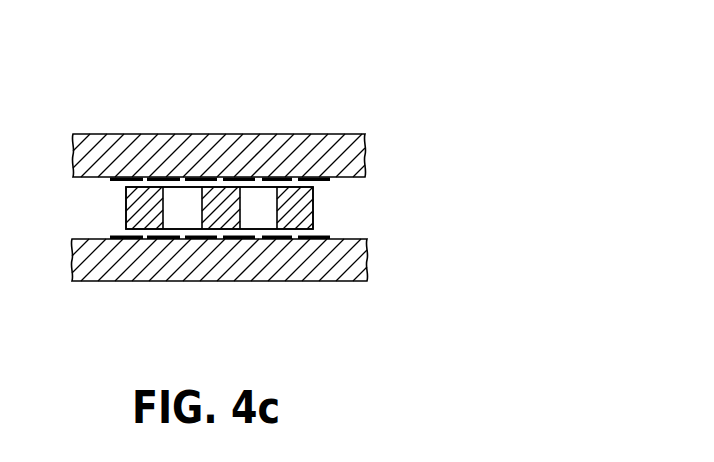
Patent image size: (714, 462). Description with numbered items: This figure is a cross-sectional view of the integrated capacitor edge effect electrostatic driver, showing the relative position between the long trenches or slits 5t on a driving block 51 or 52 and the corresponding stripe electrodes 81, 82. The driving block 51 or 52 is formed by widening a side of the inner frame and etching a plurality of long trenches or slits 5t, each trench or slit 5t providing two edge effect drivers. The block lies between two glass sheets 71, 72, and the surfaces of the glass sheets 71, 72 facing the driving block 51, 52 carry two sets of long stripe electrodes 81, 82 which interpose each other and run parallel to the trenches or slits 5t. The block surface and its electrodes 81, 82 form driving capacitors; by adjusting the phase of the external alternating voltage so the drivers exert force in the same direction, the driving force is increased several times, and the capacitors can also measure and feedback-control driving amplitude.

The glass sheet 72 is at (356, 154).
The glass sheet 71 is at (356, 262).
The driving block 51 is at (308, 210).
The driving block 52 is at (219, 208).
The long trench or slit 5t is at (170, 192).
The long stripe electrode 81 is at (228, 177).
The long stripe electrode 82 is at (204, 177).